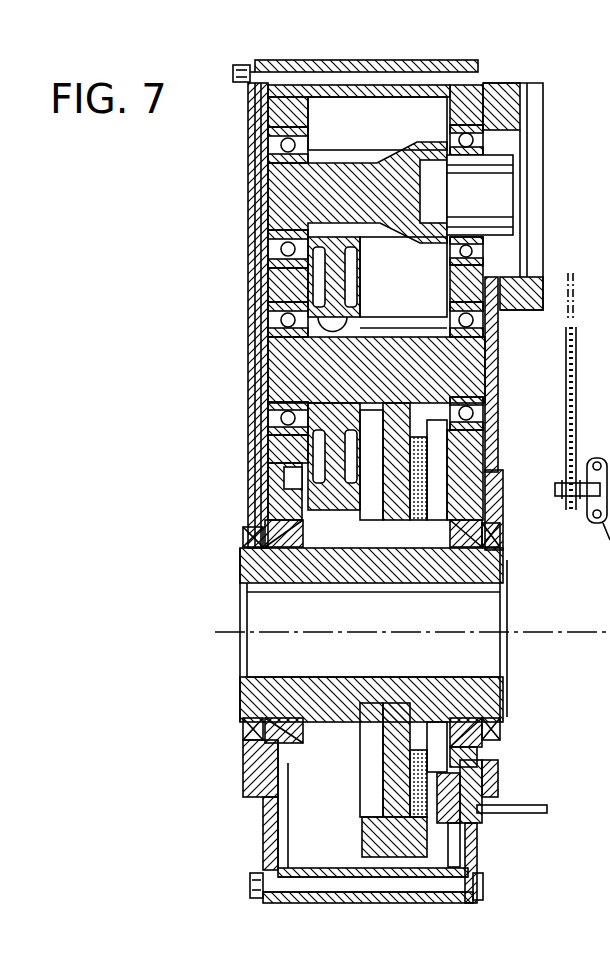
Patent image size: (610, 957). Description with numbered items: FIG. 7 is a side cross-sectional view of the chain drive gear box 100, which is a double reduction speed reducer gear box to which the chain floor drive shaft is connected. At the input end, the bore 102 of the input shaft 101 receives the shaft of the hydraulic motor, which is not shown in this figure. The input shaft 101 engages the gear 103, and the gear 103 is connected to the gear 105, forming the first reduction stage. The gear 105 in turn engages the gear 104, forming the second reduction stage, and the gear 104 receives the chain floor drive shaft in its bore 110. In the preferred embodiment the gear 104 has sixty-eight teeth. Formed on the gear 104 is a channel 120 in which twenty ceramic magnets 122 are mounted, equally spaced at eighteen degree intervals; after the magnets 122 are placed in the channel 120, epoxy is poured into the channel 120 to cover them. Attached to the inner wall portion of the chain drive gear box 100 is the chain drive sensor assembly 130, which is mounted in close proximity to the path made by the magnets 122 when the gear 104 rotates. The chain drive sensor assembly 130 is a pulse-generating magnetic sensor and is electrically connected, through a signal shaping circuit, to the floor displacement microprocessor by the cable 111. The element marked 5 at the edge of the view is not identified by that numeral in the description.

The chain drive gear box 100 is at (240, 504).
The input shaft 101 is at (290, 190).
The bore 102 is at (512, 200).
The gear 103 is at (333, 283).
The gear 104 is at (385, 432).
The gear 105 is at (297, 366).
The bore 110 is at (270, 611).
The cable 111 is at (533, 815).
The channel 120 is at (503, 533).
The ceramic magnets 122 is at (507, 593).
The chain drive sensor assembly 130 is at (477, 782).
The chain 5 is at (577, 352).